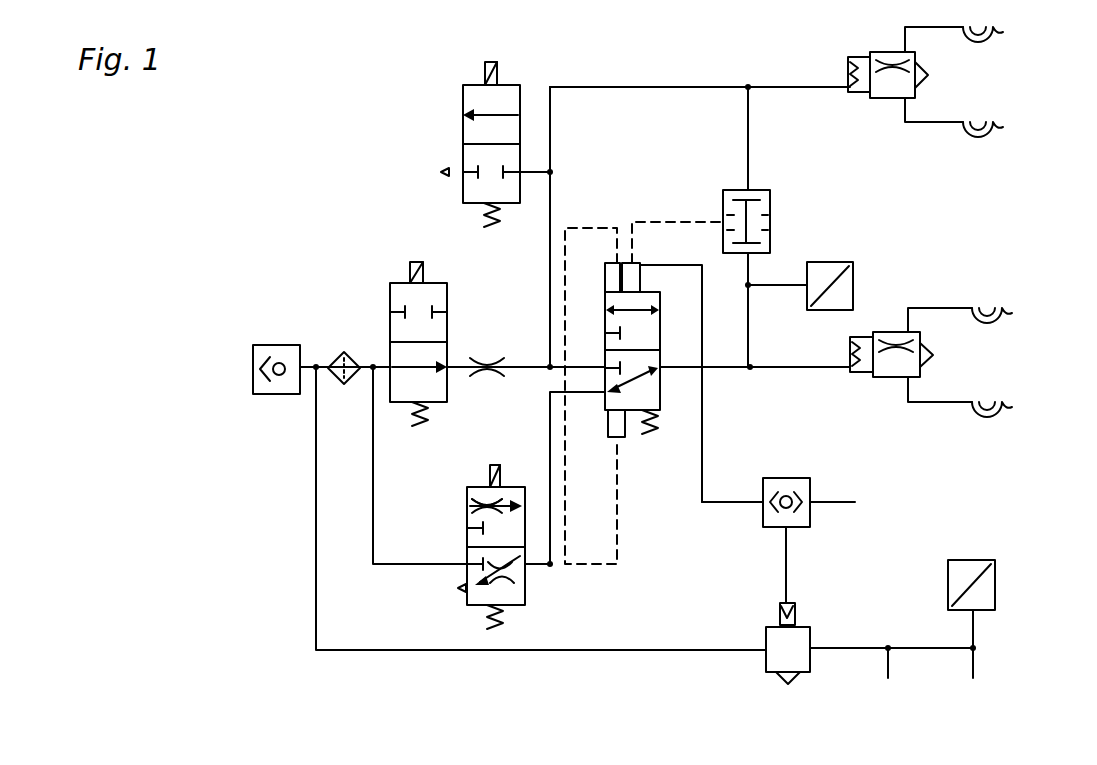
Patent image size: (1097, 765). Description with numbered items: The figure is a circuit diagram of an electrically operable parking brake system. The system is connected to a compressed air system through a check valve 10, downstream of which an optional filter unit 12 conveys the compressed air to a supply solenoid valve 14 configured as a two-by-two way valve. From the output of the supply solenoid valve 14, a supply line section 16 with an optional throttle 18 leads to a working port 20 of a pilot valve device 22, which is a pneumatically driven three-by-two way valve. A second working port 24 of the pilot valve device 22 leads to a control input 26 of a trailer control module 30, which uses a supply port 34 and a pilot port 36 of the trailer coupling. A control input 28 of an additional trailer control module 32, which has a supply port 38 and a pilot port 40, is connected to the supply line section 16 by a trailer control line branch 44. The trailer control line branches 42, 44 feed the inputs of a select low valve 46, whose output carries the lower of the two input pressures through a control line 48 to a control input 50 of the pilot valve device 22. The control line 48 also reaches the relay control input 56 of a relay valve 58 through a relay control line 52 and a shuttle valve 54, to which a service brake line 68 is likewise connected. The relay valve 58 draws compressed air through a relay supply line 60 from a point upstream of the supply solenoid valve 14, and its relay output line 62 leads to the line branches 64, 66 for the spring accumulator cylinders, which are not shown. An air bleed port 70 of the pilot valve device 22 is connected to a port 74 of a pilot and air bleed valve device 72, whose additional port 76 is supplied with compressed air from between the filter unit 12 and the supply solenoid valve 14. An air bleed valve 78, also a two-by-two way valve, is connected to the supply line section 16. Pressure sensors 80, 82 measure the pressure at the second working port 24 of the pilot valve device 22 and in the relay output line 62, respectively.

The check valve 10 is at (242, 396).
The filter unit 12 is at (340, 352).
The supply solenoid valve 14 is at (388, 297).
The supply line section 16 is at (529, 362).
The throttle 18 is at (488, 382).
The working port 20 is at (596, 307).
The pilot valve device 22 is at (662, 393).
The second working port 24 is at (667, 306).
The control input 26 is at (855, 376).
The control input 28 is at (853, 96).
The trailer control module 30 is at (888, 380).
The additional trailer control module 32 is at (887, 100).
The supply port 34 is at (1008, 313).
The pilot port 36 is at (1008, 406).
The supply port 38 is at (1005, 30).
The pilot port 40 is at (1005, 130).
The trailer control line branch 42 is at (752, 373).
The trailer control line branch 44 is at (681, 86).
The select low valve 46 is at (772, 200).
The control line 48 is at (682, 220).
The control input 50 is at (637, 274).
The relay control line 52 is at (713, 505).
The shuttle valve 54 is at (772, 475).
The relay control input 56 is at (797, 615).
The relay valve 58 is at (760, 662).
The relay supply line 60 is at (548, 653).
The relay output line 62 is at (855, 650).
The line branch 64 is at (884, 672).
The line branch 66 is at (975, 660).
The service brake line 68 is at (840, 505).
The air bleed port 70 is at (596, 335).
The pilot and air bleed valve device 72 is at (528, 590).
The port 74 is at (533, 495).
The additional port 76 is at (465, 505).
The air bleed valve 78 is at (462, 96).
The pressure sensor 80 is at (855, 272).
The pressure sensor 82 is at (998, 578).